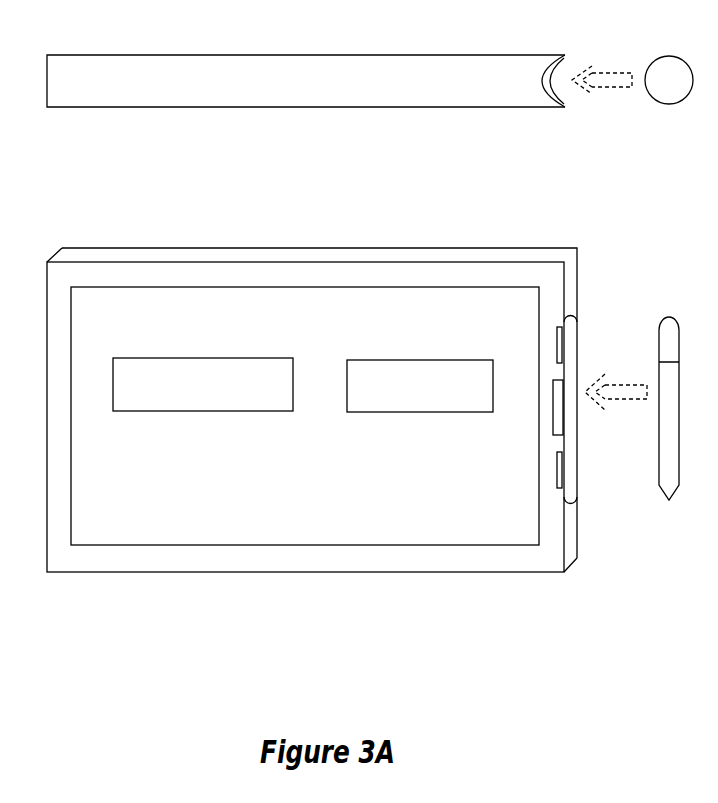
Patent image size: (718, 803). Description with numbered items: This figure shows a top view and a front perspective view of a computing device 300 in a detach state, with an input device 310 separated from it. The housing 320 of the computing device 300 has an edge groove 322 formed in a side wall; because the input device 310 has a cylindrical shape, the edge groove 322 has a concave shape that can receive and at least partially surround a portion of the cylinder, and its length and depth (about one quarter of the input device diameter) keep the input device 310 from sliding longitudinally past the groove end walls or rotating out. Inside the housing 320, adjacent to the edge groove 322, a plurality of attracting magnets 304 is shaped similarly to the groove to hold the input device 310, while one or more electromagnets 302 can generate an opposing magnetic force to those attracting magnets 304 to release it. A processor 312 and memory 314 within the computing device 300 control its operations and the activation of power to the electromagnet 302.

The computing device 300 is at (190, 35).
The electromagnet 302 is at (552, 408).
The attracting magnets 304 is at (545, 57).
The input device 310 is at (663, 58).
The processor 312 is at (212, 358).
The memory 314 is at (413, 360).
The housing 320 is at (383, 54).
The edge groove 322 is at (550, 83).